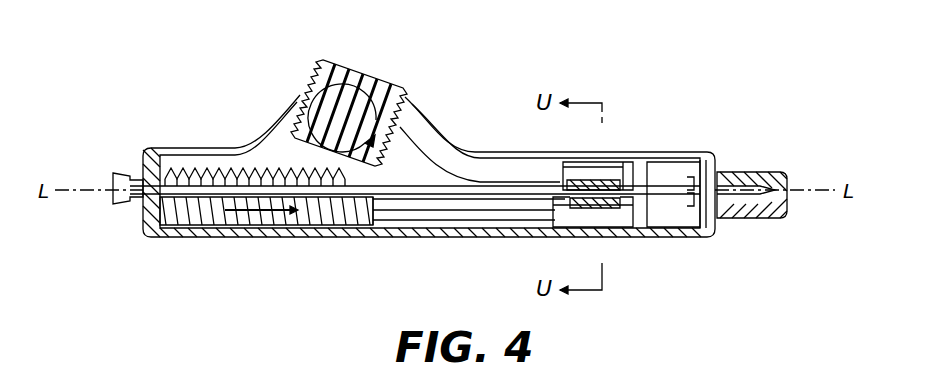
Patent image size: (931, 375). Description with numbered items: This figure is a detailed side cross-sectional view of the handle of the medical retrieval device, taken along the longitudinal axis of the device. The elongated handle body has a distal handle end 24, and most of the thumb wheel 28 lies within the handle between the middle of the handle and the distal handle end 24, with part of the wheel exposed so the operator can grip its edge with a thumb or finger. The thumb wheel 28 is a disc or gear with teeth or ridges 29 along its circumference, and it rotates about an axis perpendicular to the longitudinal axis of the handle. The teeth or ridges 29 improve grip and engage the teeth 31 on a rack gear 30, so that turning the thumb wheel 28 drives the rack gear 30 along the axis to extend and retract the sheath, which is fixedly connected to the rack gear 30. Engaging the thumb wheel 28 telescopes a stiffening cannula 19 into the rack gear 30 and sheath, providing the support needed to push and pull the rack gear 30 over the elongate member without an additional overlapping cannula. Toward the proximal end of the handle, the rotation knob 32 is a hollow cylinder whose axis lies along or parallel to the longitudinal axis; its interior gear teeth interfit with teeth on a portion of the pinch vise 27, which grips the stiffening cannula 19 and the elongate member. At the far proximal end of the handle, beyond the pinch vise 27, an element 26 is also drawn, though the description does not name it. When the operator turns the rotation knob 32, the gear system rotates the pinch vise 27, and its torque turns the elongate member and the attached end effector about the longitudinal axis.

The stiffening cannula 19 is at (433, 200).
The distal handle end 24 is at (162, 237).
The pin 26 is at (770, 172).
The pinch vise 27 is at (600, 232).
The thumb wheel 28 is at (325, 66).
The teeth or ridges 29 is at (410, 92).
The rack gear 30 is at (331, 210).
The teeth 31 is at (288, 168).
The rotation knob 32 is at (620, 155).